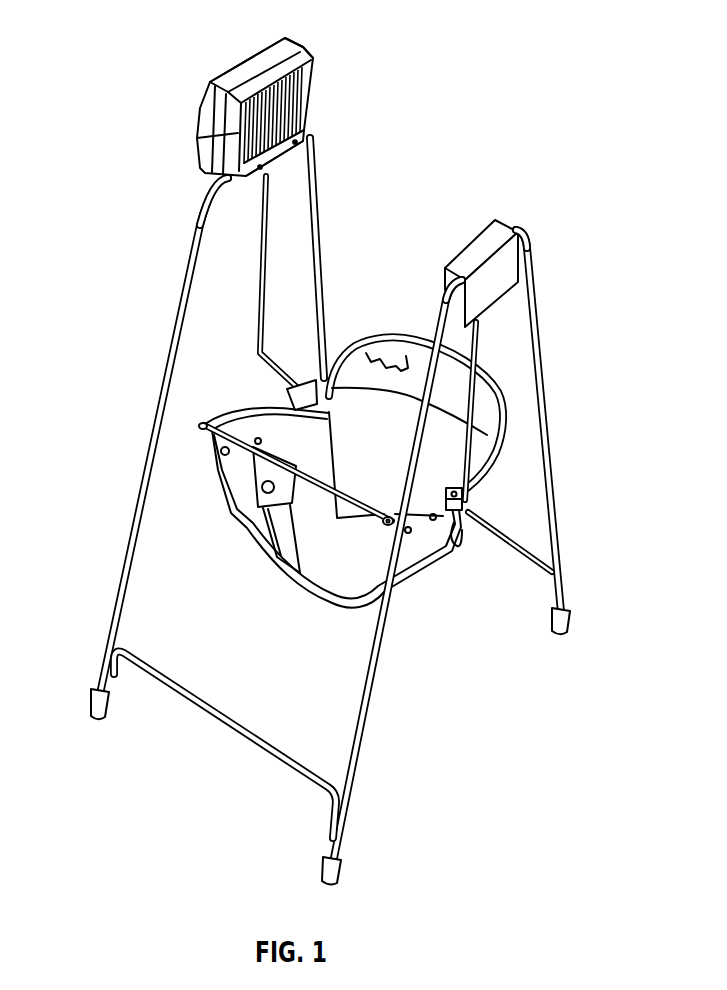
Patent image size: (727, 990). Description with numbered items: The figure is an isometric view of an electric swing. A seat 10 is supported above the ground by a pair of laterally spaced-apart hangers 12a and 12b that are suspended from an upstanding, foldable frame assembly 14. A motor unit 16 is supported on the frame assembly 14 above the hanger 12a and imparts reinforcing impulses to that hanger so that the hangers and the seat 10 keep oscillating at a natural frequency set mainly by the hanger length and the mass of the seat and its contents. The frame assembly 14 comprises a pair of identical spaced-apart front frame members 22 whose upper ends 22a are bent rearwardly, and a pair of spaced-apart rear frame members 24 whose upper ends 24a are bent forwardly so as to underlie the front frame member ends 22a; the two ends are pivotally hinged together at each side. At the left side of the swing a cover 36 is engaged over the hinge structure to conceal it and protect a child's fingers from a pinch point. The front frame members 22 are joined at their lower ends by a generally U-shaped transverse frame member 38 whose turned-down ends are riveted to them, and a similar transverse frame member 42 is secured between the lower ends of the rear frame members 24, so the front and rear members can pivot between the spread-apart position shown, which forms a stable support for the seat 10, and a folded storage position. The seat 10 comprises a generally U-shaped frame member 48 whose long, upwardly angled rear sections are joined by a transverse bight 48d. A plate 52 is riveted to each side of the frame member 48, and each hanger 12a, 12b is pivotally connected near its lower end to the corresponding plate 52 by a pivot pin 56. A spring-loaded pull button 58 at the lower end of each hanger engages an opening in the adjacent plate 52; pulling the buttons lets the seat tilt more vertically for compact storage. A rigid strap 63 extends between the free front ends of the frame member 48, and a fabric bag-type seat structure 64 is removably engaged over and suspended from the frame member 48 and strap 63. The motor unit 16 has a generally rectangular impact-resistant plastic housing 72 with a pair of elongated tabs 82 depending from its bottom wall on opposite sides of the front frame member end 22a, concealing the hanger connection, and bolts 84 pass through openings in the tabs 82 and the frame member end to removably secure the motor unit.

The seat 10 is at (338, 446).
The hanger 12a is at (258, 312).
The hanger 12b is at (524, 349).
The frame assembly 14 is at (338, 485).
The motor unit 16 is at (230, 114).
The front frame member 22 is at (128, 575).
The upper end of front frame member 22a is at (208, 196).
The rear frame member 24 is at (318, 159).
The upper end of rear frame member 24a is at (297, 143).
The cover 36 is at (472, 262).
The transverse frame member 38 is at (235, 723).
The transverse frame member 42 is at (512, 541).
The frame member 48 is at (200, 432).
The transverse bight 48d is at (392, 340).
The plate 52 is at (304, 380).
The pivot pin 56 is at (473, 495).
The spring-loaded pull button 58 is at (461, 533).
The rigid strap 63 is at (347, 511).
The fabric bag-type seat structure 64 is at (323, 598).
The housing 72 is at (248, 45).
The tab 82 is at (255, 170).
The bolt 84 is at (266, 166).